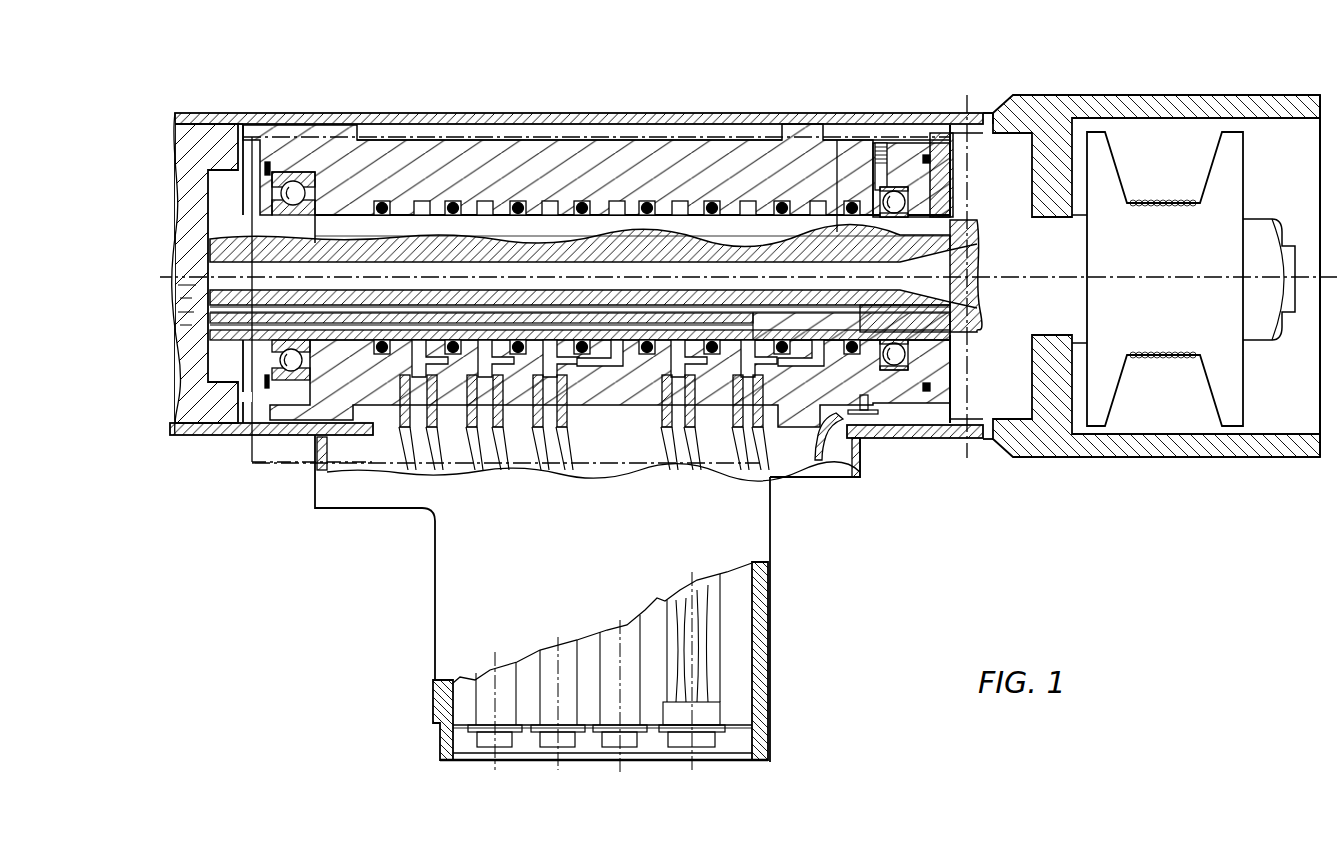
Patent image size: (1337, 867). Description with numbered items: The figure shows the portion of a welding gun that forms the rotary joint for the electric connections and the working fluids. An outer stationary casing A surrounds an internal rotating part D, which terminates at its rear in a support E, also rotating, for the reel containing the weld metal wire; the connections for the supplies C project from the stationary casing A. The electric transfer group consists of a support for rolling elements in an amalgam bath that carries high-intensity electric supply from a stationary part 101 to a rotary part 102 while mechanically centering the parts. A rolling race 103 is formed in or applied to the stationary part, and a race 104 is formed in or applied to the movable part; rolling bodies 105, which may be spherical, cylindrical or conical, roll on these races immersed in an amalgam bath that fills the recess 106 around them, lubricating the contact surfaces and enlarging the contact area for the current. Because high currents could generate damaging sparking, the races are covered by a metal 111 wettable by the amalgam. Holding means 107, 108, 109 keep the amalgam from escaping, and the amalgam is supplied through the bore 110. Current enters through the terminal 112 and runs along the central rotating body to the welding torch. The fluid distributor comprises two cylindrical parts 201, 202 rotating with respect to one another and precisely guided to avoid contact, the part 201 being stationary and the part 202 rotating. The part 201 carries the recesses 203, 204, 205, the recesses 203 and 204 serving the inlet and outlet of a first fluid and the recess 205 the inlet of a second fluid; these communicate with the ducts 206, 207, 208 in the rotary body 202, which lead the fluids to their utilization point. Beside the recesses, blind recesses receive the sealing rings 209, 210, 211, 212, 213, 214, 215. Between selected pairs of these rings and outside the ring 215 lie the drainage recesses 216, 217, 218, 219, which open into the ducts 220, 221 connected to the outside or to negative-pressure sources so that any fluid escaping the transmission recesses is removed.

The stationary part 101 is at (860, 177).
The rotary part 102 is at (837, 230).
The rolling race 103 is at (935, 137).
The race 104 is at (957, 170).
The rolling bodies 105 is at (965, 440).
The recess 106 is at (881, 143).
The holding means 107 is at (1100, 457).
The holding means 108 is at (1017, 417).
The holding means 109 is at (865, 414).
The bore 110 is at (888, 143).
The metal 111 is at (1040, 456).
The terminal 112 is at (885, 446).
The cylindrical part 201 is at (283, 150).
The cylindrical part 202 is at (295, 162).
The recess 203 is at (484, 342).
The recess 204 is at (548, 344).
The recess 205 is at (748, 337).
The duct 206 is at (250, 397).
The duct 207 is at (325, 300).
The duct 208 is at (295, 327).
The sealing ring 209 is at (350, 227).
The sealing ring 210 is at (452, 203).
The sealing ring 211 is at (485, 203).
The sealing ring 212 is at (518, 203).
The sealing ring 213 is at (620, 203).
The sealing ring 214 is at (680, 203).
The sealing ring 215 is at (711, 203).
The drainage recess 216 is at (383, 203).
The drainage recess 217 is at (582, 203).
The drainage recess 218 is at (662, 130).
The drainage recess 219 is at (781, 203).
The duct 220 is at (418, 362).
The duct 221 is at (677, 398).
The outer stationary casing A is at (452, 118).
The connections for the supplies C is at (453, 645).
The internal rotating part D is at (522, 168).
The support E is at (1180, 160).